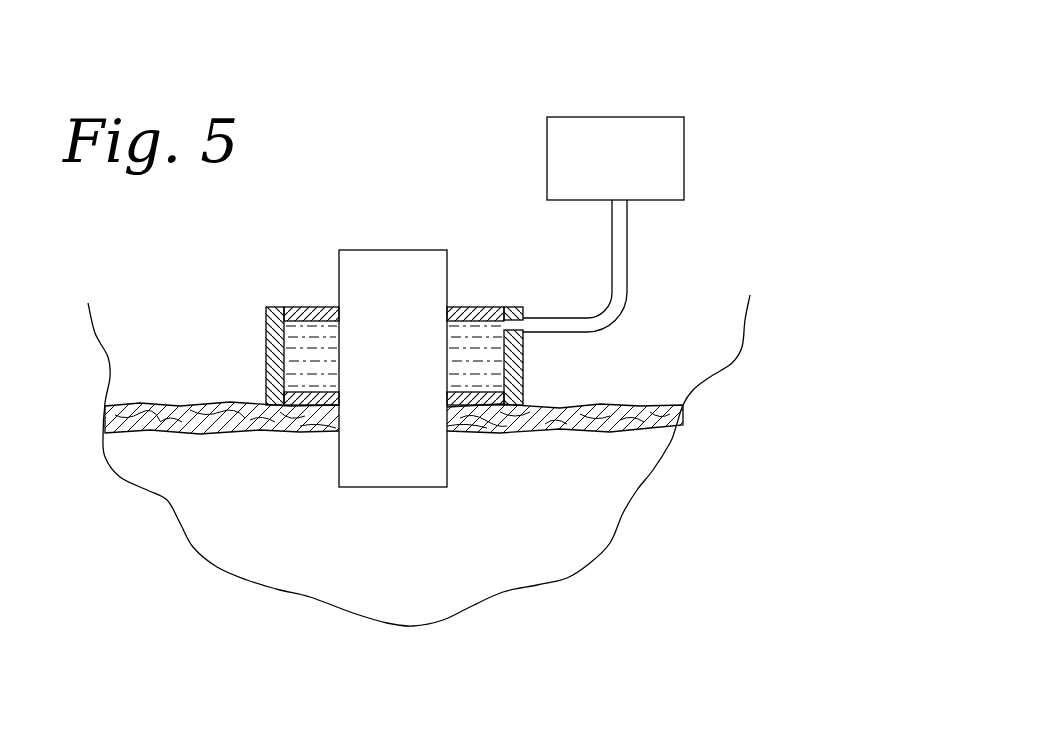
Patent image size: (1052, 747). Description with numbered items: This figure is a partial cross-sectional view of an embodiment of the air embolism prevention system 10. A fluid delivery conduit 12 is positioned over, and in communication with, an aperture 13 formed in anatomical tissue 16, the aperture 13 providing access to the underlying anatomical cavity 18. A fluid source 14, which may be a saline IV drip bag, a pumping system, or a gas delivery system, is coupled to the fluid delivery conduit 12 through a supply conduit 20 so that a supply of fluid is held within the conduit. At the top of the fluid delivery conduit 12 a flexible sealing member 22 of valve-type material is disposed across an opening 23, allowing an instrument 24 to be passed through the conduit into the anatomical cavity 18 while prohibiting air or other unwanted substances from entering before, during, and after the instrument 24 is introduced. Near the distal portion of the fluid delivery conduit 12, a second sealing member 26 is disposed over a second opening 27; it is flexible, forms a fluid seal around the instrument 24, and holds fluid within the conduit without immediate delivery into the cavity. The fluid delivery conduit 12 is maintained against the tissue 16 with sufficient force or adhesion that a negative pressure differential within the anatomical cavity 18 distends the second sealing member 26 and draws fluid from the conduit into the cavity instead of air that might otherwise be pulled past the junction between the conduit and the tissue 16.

The air embolism prevention system 10 is at (655, 81).
The fluid delivery conduit 12 is at (265, 325).
The aperture 13 is at (337, 430).
The fluid source 14 is at (685, 175).
The anatomical tissue 16 is at (575, 407).
The anatomical cavity 18 is at (528, 532).
The supply conduit 20 is at (628, 277).
The flexible sealing member 22 is at (473, 307).
The opening 23 is at (492, 305).
The instrument 24 is at (338, 283).
The second sealing member 26 is at (295, 428).
The second opening 27 is at (260, 430).